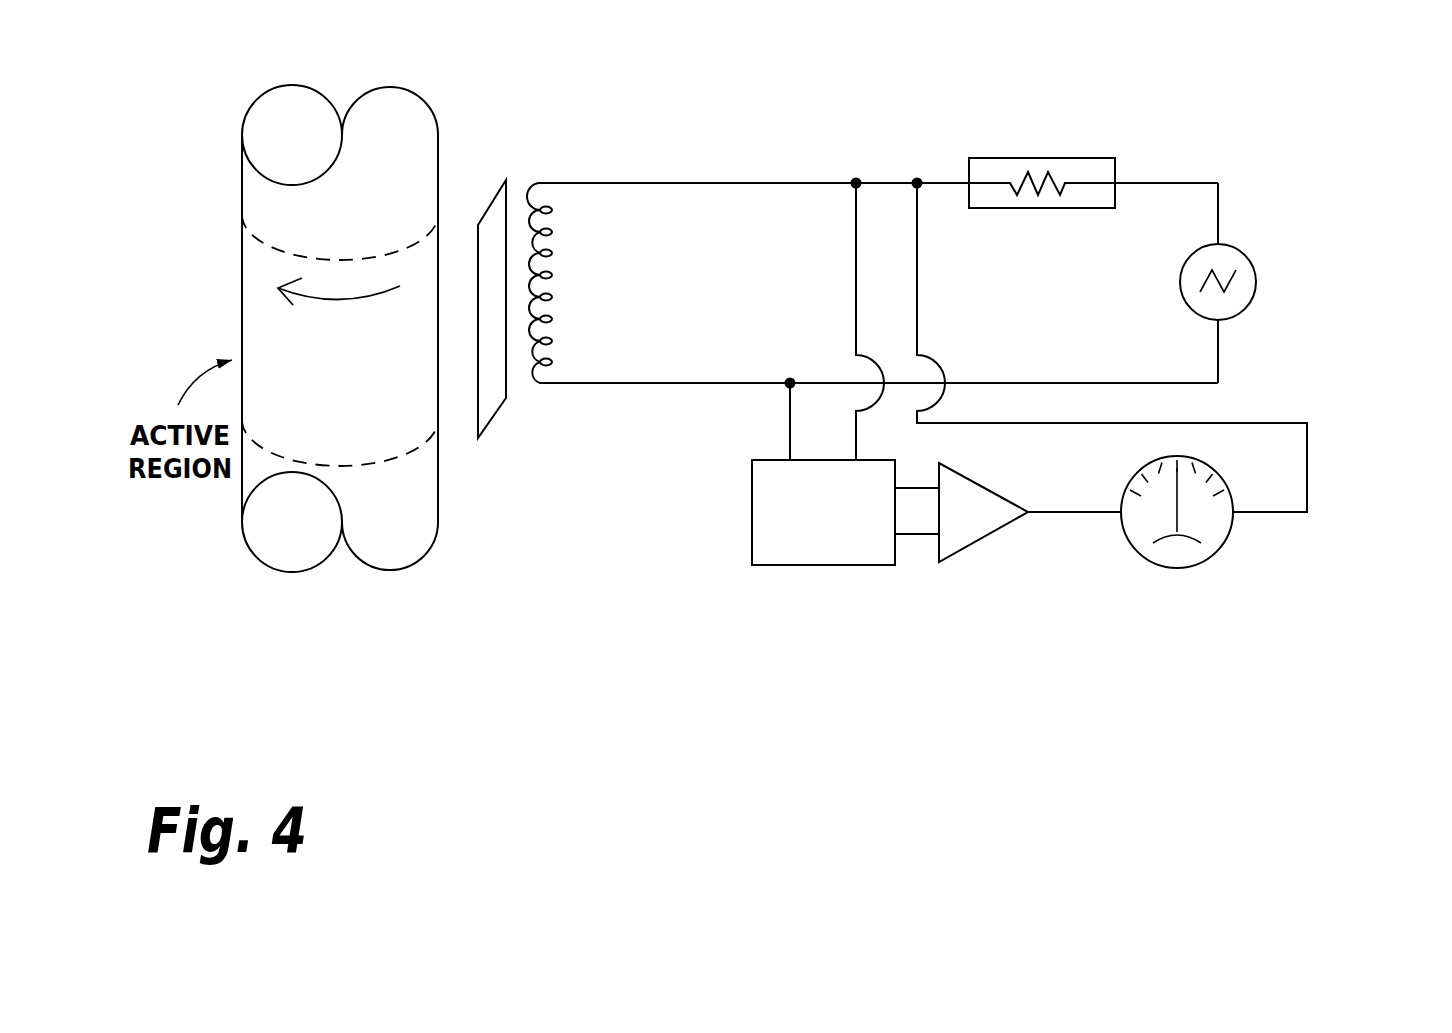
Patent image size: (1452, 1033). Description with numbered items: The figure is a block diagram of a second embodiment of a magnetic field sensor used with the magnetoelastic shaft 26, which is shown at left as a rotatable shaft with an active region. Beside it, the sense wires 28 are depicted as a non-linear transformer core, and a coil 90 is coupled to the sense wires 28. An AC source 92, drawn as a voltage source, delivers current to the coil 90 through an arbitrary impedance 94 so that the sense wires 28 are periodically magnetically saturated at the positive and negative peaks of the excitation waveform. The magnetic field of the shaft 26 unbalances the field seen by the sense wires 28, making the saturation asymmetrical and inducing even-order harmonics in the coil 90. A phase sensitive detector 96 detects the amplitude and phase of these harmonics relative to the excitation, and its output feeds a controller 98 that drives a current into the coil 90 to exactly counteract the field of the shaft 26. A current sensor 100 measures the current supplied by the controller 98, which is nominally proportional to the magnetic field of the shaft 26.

The magnetoelastic shaft 26 is at (395, 545).
The sense wires 28 is at (504, 418).
The coil 90 is at (532, 152).
The AC source 92 is at (1305, 291).
The arbitrary impedance 94 is at (1040, 158).
The phase sensitive detector 96 is at (810, 565).
The controller 98 is at (1013, 617).
The current sensor 100 is at (1262, 613).